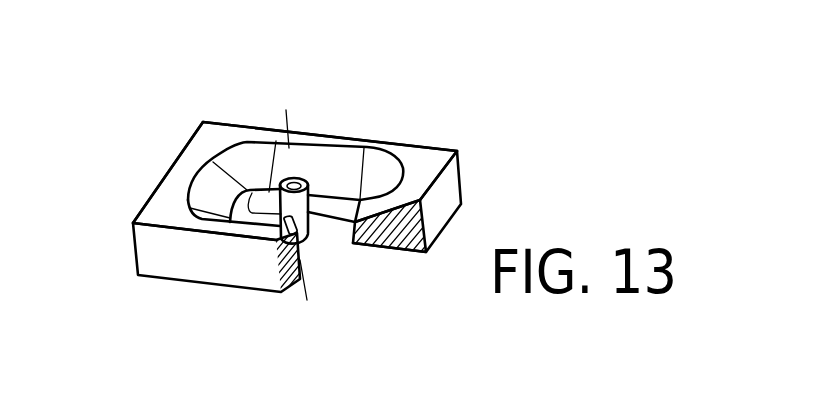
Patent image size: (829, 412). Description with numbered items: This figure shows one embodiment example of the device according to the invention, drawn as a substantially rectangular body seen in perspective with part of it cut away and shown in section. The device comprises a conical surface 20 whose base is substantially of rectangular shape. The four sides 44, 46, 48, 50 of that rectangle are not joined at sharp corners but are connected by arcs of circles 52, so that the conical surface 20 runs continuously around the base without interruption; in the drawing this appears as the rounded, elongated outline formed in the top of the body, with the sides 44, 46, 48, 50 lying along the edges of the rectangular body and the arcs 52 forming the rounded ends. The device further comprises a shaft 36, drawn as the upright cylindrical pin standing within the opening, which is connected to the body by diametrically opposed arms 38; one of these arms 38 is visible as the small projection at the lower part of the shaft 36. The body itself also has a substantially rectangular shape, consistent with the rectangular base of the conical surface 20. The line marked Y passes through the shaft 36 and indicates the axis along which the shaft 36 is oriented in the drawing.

The conical surface 20 is at (381, 171).
The shaft 36 is at (315, 227).
The arms 38 is at (308, 235).
The side 44 is at (338, 140).
The side 46 is at (459, 165).
The side 48 is at (249, 237).
The side 50 is at (192, 170).
The arcs of circles 52 is at (234, 146).
The axis Y is at (287, 112).